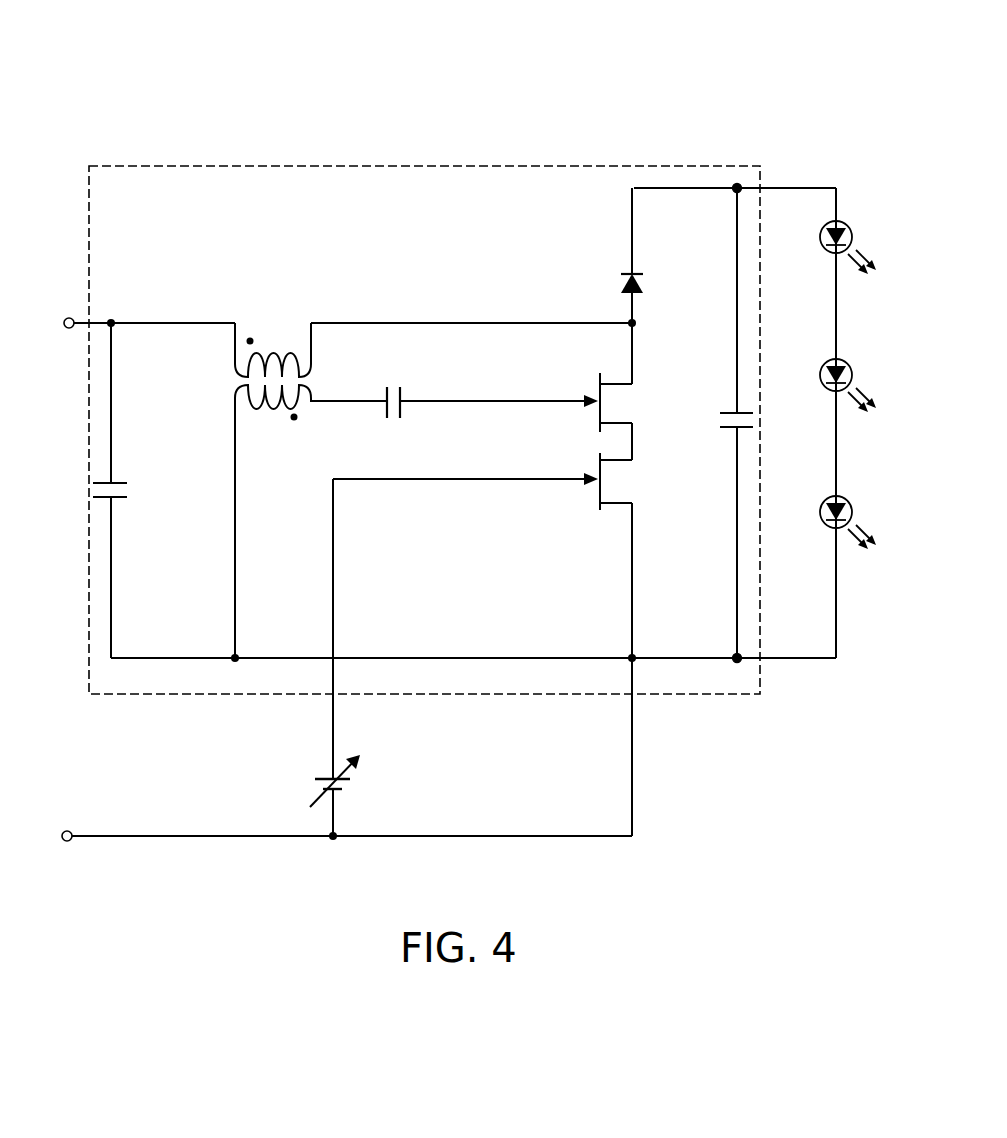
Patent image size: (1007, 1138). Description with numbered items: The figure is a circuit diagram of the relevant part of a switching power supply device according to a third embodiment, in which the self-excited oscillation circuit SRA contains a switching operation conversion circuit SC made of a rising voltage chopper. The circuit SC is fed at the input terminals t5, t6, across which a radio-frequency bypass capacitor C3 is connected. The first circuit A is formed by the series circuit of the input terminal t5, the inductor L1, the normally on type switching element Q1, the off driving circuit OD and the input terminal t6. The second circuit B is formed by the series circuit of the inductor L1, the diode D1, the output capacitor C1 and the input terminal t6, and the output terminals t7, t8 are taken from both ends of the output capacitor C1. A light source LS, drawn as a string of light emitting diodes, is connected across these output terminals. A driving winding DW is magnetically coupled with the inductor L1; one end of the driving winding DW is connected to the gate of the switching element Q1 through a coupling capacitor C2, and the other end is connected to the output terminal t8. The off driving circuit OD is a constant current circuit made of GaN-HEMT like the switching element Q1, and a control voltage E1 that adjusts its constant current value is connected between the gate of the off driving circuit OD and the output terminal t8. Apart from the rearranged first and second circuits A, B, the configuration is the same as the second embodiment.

The self-excited oscillation circuit SRA is at (347, 30).
The switching operation conversion circuit SC is at (468, 130).
The input terminal t5 is at (69, 317).
The input terminal t6 is at (67, 842).
The output terminal t7 is at (737, 186).
The output terminal t8 is at (737, 662).
The inductor L1 is at (276, 345).
The driving winding DW is at (274, 413).
The output capacitor C1 is at (754, 418).
The coupling capacitor C2 is at (393, 392).
The radio-frequency bypass capacitor C3 is at (128, 490).
The diode D1 is at (648, 283).
The normally on type switching element Q1 is at (618, 401).
The off driving circuit OD is at (618, 480).
The first circuit A is at (617, 582).
The second circuit B is at (651, 226).
The control voltage E1 is at (313, 782).
The light source LS is at (848, 226).